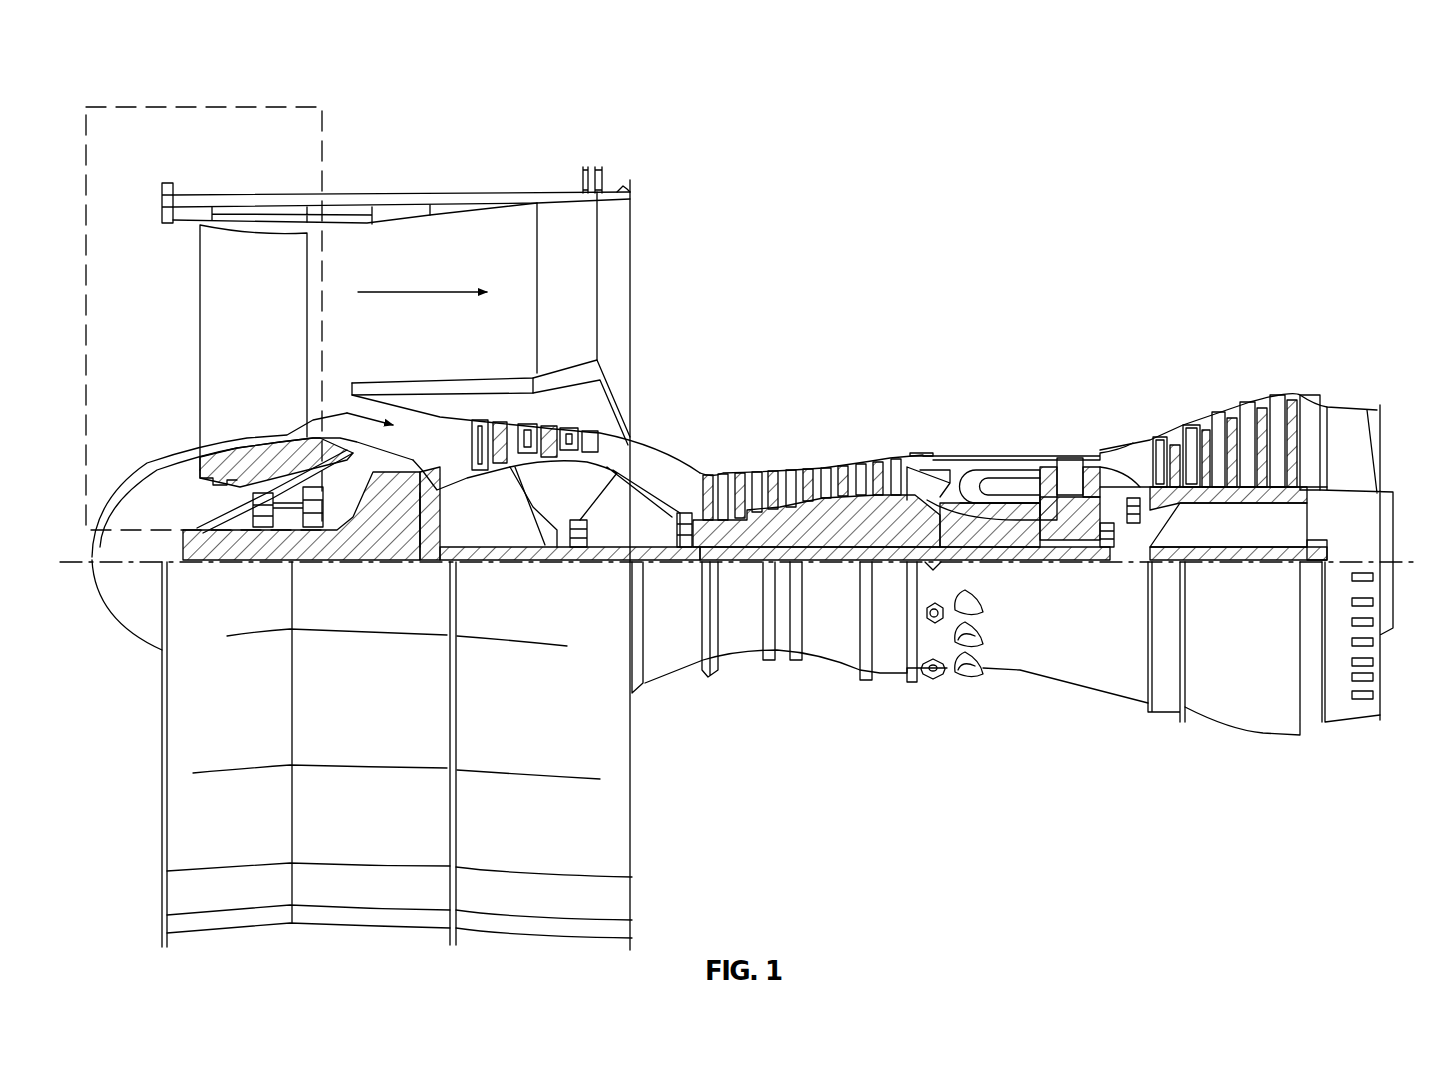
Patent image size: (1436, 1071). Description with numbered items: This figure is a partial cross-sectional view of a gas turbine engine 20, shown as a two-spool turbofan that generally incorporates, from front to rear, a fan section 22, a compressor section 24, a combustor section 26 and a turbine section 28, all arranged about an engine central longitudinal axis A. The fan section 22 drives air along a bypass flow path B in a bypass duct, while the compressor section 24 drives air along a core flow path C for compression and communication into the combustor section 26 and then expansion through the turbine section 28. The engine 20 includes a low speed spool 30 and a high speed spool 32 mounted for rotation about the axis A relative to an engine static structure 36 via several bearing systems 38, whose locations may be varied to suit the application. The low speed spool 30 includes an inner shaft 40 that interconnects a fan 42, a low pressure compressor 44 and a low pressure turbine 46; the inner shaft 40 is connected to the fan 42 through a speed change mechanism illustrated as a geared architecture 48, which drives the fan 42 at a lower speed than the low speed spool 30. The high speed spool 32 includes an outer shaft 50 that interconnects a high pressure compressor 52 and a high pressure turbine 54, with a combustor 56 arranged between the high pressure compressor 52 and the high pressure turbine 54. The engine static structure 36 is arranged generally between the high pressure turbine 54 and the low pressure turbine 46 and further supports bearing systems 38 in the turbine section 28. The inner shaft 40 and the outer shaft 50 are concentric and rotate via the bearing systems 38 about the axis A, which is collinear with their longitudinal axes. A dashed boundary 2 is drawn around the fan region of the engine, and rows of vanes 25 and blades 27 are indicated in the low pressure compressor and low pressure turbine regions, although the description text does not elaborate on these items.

The section view region 2 is at (120, 104).
The gas turbine engine 20 is at (1138, 243).
The fan section 22 is at (280, 178).
The compressor section 24 is at (823, 387).
The stator vanes 25 is at (480, 430).
The combustor section 26 is at (995, 387).
The rotor blades 27 is at (505, 427).
The turbine section 28 is at (1180, 352).
The low speed spool 30 is at (850, 565).
The high speed spool 32 is at (918, 490).
The engine static structure 36 is at (890, 677).
The bearing systems 38 is at (262, 533).
The inner shaft 40 is at (650, 562).
The fan 42 is at (280, 325).
The low pressure compressor 44 is at (547, 430).
The low pressure turbine 46 is at (1232, 420).
The geared architecture 48 is at (400, 527).
The outer shaft 50 is at (1030, 547).
The high pressure compressor 52 is at (815, 527).
The high pressure turbine 54 is at (1068, 458).
The combustor 56 is at (978, 487).
The engine central longitudinal axis A is at (1392, 560).
The bypass flow path B is at (423, 290).
The core flow path C is at (295, 420).